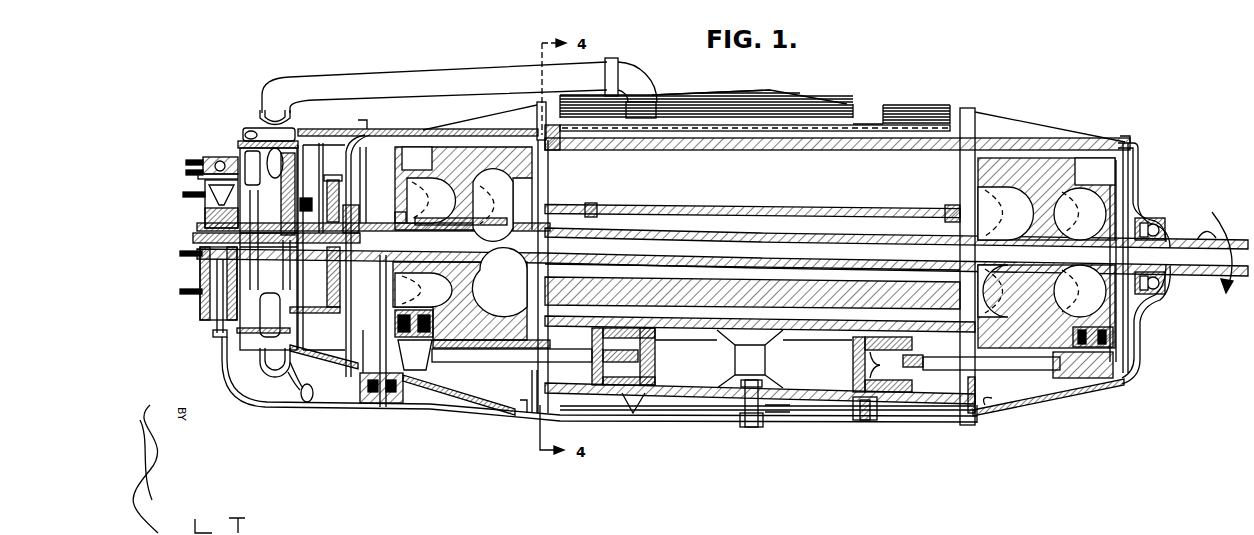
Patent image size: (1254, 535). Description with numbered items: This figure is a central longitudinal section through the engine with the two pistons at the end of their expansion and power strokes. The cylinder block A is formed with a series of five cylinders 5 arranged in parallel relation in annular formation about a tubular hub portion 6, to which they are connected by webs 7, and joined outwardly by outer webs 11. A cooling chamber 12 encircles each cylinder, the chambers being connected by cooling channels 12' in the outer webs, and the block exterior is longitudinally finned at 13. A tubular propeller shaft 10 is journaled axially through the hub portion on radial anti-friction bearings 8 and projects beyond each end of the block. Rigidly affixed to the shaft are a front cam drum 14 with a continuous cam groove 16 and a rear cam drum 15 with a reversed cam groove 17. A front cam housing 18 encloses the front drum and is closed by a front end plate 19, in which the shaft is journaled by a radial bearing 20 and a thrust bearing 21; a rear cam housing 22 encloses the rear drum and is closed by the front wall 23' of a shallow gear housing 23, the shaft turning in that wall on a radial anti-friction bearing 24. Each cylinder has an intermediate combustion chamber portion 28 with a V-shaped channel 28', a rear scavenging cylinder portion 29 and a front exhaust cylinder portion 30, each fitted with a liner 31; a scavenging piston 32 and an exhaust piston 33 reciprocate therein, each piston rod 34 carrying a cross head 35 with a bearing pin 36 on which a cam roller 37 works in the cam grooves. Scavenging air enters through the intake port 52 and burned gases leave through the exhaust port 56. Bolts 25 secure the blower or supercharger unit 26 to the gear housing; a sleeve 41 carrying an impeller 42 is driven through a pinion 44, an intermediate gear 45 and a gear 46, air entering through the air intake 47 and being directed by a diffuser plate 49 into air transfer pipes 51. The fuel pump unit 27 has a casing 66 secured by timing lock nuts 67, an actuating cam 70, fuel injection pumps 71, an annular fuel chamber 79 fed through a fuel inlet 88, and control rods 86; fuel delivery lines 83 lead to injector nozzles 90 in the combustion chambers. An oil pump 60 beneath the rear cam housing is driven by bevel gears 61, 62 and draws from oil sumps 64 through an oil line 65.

The cylinder 5 is at (678, 165).
The tubular hub portion 6 is at (777, 208).
The web 7 is at (790, 297).
The radial anti-friction bearing 8 is at (590, 205).
The tubular propeller shaft 10 is at (1187, 260).
The outer web 11 is at (727, 138).
The cooling chamber 12 is at (904, 426).
The cooling channel 12' is at (901, 102).
The cooling fin 13 is at (775, 92).
The front cam wheel or drum 14 is at (1040, 170).
The rear cam wheel or drum 15 is at (480, 150).
The cam groove 16 is at (1093, 177).
The cam groove 17 is at (405, 160).
The front cam housing 18 is at (1003, 140).
The front end plate 19 is at (1140, 157).
The radial bearing 20 is at (1147, 210).
The thrust bearing 21 is at (1160, 218).
The rear cam housing 22 is at (445, 150).
The gear housing 23 is at (283, 196).
The front wall 23' is at (366, 248).
The radial anti-friction bearing 24 is at (360, 200).
The bolt 25 is at (237, 140).
The blower or supercharger unit 26 is at (247, 118).
The fuel pump unit 27 is at (198, 208).
The combustion chamber portion 28 is at (777, 447).
The V-shaped channel 28' is at (750, 359).
The rear or scavenging cylinder portion 29 is at (668, 405).
The front or exhaust cylinder portion 30 is at (832, 405).
The liner 31 is at (687, 385).
The rear or scavenging piston 32 is at (590, 390).
The front or exhaust piston 33 is at (900, 392).
The piston rod 34 is at (492, 363).
The cross head 35 is at (633, 82).
The bearing pin 36 is at (432, 362).
The cam roller 37 is at (483, 292).
The sleeve 41 is at (319, 160).
The impeller 42 is at (267, 258).
The pinion 44 is at (307, 350).
The intermediate gear 45 is at (312, 378).
The gear 46 is at (305, 195).
The air intake 47 is at (247, 345).
The diffuser plate 49 is at (333, 176).
The air transfer pipe 51 is at (396, 78).
The scavenging air intake port 52 is at (638, 392).
The exhaust port 56 is at (863, 423).
The oil pump 60 is at (377, 403).
The bevel gear 61 is at (400, 213).
The bevel gear 62 is at (397, 248).
The oil sump 64 is at (518, 395).
The oil line 65 is at (467, 407).
The casing 66 is at (205, 298).
The timing lock nut 67 is at (200, 176).
The two lobed actuating cam 70 is at (198, 234).
The fuel injection pump 71 is at (200, 260).
The annular fuel chamber 79 is at (222, 158).
The fuel delivery line 83 is at (247, 405).
The control rod 86 is at (200, 192).
The fuel inlet 88 is at (200, 162).
The fuel injector nozzle 90 is at (750, 440).
The cylinder block A is at (815, 110).